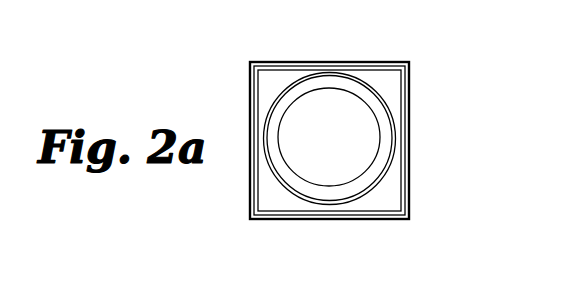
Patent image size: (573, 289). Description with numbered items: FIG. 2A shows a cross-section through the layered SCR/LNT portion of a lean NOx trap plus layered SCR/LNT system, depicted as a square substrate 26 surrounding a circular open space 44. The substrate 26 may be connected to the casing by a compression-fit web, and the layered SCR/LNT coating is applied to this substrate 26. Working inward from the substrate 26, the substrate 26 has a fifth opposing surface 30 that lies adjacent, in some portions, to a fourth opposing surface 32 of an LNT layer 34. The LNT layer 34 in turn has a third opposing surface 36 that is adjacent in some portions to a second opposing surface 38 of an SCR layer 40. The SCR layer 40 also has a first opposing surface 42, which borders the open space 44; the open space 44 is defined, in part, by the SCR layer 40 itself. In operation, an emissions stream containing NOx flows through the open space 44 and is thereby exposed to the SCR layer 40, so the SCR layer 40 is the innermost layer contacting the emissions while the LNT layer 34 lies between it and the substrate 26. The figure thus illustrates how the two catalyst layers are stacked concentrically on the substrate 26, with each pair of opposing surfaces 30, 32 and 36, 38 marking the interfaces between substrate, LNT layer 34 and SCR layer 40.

The substrate 26 is at (385, 220).
The fifth opposing surface 30 is at (404, 201).
The fourth opposing surface 32 is at (402, 185).
The LNT layer 34 is at (388, 180).
The third opposing surface 36 is at (398, 125).
The second opposing surface 38 is at (391, 111).
The SCR layer 40 is at (374, 98).
The first opposing surface 42 is at (359, 92).
The open space 44 is at (338, 146).